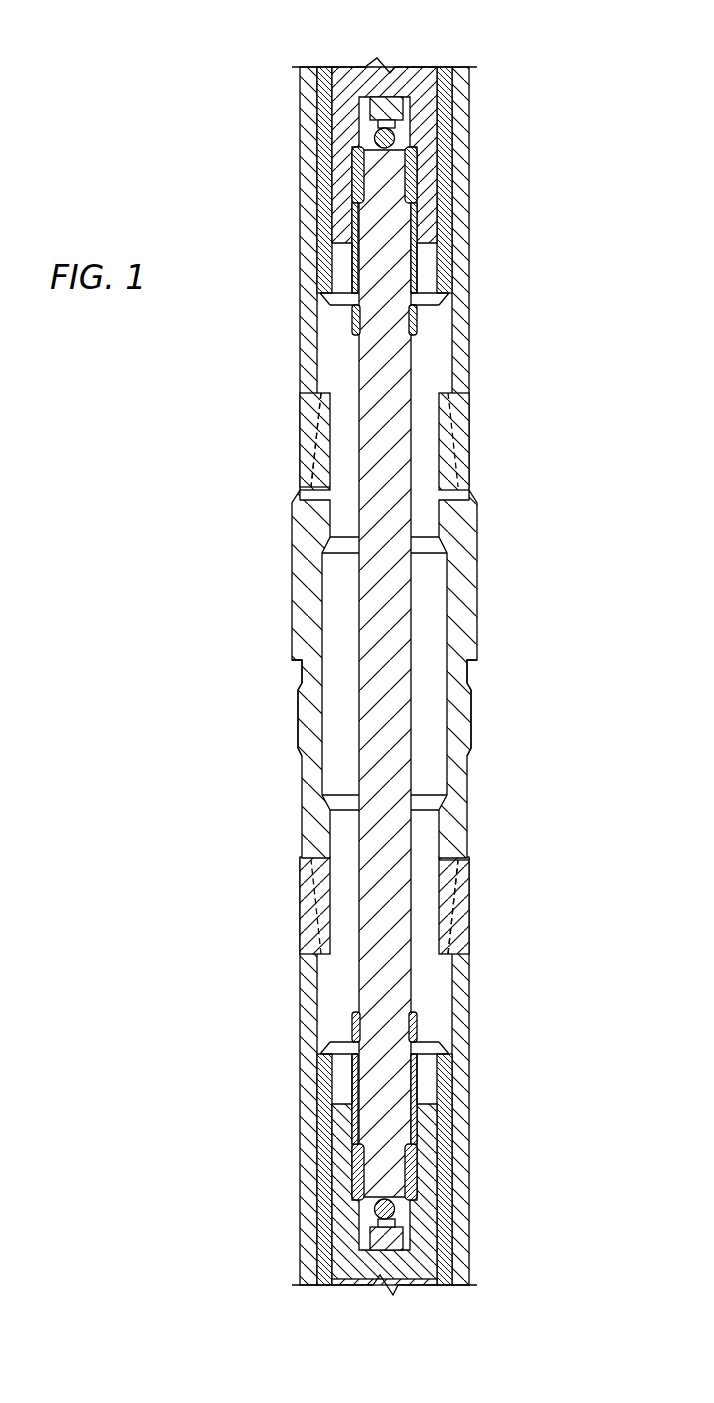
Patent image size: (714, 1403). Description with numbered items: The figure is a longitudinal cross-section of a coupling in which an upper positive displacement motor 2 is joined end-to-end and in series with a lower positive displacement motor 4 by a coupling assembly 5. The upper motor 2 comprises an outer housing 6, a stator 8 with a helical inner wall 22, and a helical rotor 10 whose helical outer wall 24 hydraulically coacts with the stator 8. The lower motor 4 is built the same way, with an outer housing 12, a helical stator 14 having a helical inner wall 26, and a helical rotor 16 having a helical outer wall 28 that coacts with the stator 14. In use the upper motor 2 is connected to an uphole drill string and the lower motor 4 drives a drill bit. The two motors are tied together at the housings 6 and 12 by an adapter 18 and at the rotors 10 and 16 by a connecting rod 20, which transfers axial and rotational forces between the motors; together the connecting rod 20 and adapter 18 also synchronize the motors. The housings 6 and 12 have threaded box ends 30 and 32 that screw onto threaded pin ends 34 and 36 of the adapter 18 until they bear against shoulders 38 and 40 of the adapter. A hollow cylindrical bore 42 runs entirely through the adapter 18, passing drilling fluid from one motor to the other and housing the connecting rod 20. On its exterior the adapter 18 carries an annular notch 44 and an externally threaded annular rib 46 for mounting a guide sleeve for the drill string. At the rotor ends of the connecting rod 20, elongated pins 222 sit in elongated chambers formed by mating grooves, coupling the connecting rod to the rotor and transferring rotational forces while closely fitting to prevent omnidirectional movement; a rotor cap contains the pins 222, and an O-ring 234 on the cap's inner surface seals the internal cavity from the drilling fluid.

The upper positive displacement motor 2 is at (427, 58).
The lower positive displacement motor 4 is at (351, 1297).
The coupling assembly 5 is at (622, 320).
The outer housing 6 is at (300, 112).
The stator 8 is at (322, 66).
The helical rotor 10 is at (365, 66).
The outer housing 12 is at (470, 1252).
The helical stator 14 is at (446, 1290).
The helical rotor 16 is at (408, 1290).
The adapter 18 is at (487, 617).
The connecting rod 20 is at (420, 760).
The helical inner wall 22 is at (438, 272).
The helical outer wall 24 is at (437, 233).
The helical inner wall 26 is at (434, 1073).
The helical outer wall 28 is at (440, 1116).
The threaded box end 30 is at (305, 418).
The threaded box end 32 is at (460, 905).
The threaded pin end 34 is at (325, 440).
The threaded pin end 36 is at (450, 936).
The shoulder 38 is at (300, 482).
The shoulder 40 is at (464, 866).
The hollow cylindrical bore 42 is at (432, 713).
The annular notch 44 is at (300, 672).
The externally threaded annular rib 46 is at (300, 710).
The elongated pins 222 is at (352, 183).
The O-ring 234 is at (418, 320).